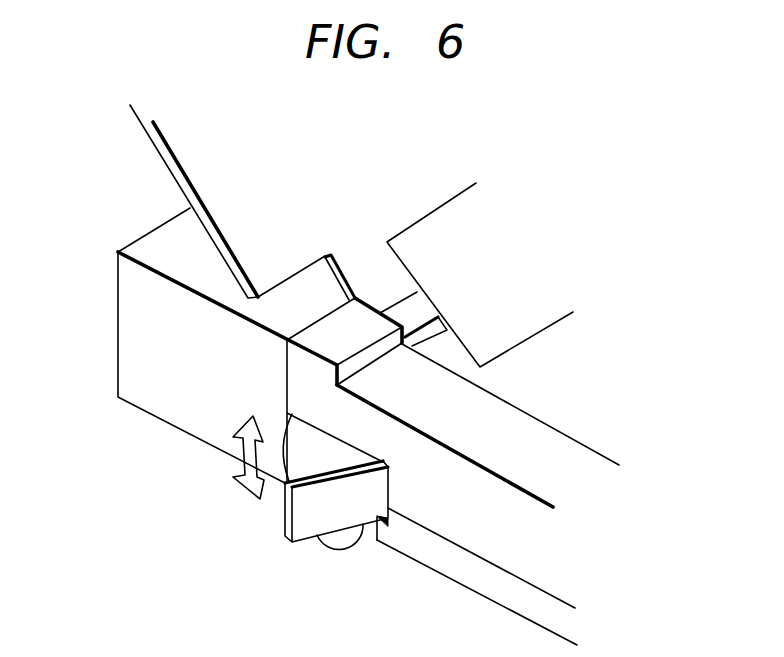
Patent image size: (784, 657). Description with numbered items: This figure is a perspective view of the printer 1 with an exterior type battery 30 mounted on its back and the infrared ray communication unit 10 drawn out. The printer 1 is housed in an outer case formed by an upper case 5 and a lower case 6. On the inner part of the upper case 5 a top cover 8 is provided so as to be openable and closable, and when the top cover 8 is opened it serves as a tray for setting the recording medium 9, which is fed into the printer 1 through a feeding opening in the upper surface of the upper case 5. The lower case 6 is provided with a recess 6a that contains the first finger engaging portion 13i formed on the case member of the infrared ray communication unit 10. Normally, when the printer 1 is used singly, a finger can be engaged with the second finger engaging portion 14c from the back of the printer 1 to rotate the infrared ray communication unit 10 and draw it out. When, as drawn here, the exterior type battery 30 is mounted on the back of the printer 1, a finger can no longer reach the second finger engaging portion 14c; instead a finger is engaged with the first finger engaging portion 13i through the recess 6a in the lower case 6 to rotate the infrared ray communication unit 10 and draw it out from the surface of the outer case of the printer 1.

The printer 1 is at (645, 313).
The upper case 5 is at (502, 495).
The lower case 6 is at (477, 568).
The recess 6a is at (371, 530).
The top cover 8 is at (322, 168).
The recording medium 9 is at (510, 262).
The infrared ray communication unit 10 is at (281, 433).
The first finger engaging portion 13i is at (341, 547).
The second finger engaging portion 14c is at (281, 521).
The exterior type battery 30 is at (137, 330).